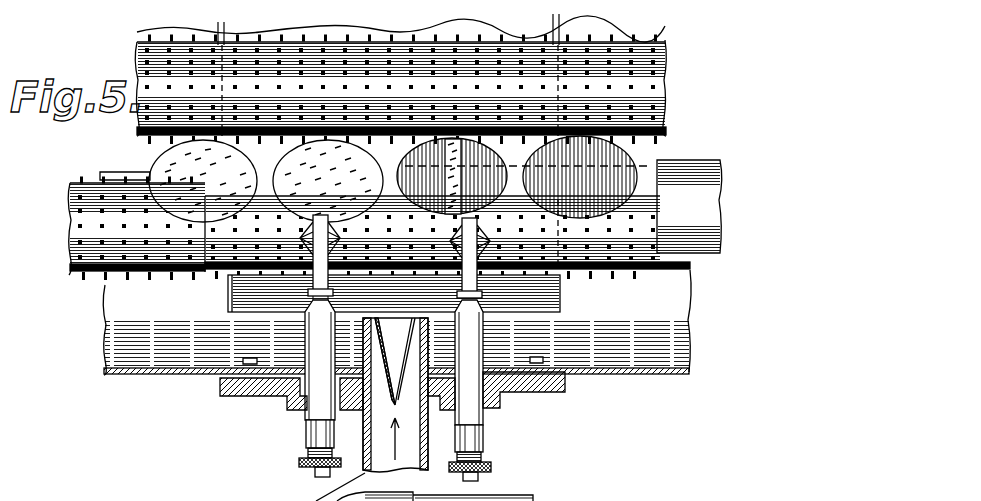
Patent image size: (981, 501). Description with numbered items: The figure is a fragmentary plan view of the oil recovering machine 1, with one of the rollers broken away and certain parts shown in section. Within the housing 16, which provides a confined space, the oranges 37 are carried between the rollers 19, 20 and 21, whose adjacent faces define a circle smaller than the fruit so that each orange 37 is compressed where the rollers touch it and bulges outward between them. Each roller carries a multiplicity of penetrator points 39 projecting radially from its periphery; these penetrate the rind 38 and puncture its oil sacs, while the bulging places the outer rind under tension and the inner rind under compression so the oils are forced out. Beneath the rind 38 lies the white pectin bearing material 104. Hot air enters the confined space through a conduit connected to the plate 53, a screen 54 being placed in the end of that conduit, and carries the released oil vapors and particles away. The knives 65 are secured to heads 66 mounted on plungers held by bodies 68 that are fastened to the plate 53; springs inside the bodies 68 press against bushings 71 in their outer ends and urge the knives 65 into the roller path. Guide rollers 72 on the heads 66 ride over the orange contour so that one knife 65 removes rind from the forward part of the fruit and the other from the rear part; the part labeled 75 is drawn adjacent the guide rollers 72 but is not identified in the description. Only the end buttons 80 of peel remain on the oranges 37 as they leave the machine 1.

The machine 1 is at (666, 32).
The roller 19 is at (655, 60).
The roller 20 is at (724, 186).
The roller 21 is at (690, 266).
The housing 16 is at (675, 316).
The orange 37 is at (157, 165).
The rind 38 is at (455, 134).
The penetrator points 39 is at (525, 88).
The plate 53 is at (237, 387).
The screen 54 is at (322, 392).
The knives 65 is at (300, 228).
The heads 66 is at (313, 280).
The bodies 68 is at (318, 398).
The bushings 71 is at (492, 466).
The guide rollers 72 is at (563, 277).
The plate lining 75 is at (520, 290).
The end buttons 80 is at (530, 168).
The pectin bearing material 104 is at (428, 138).